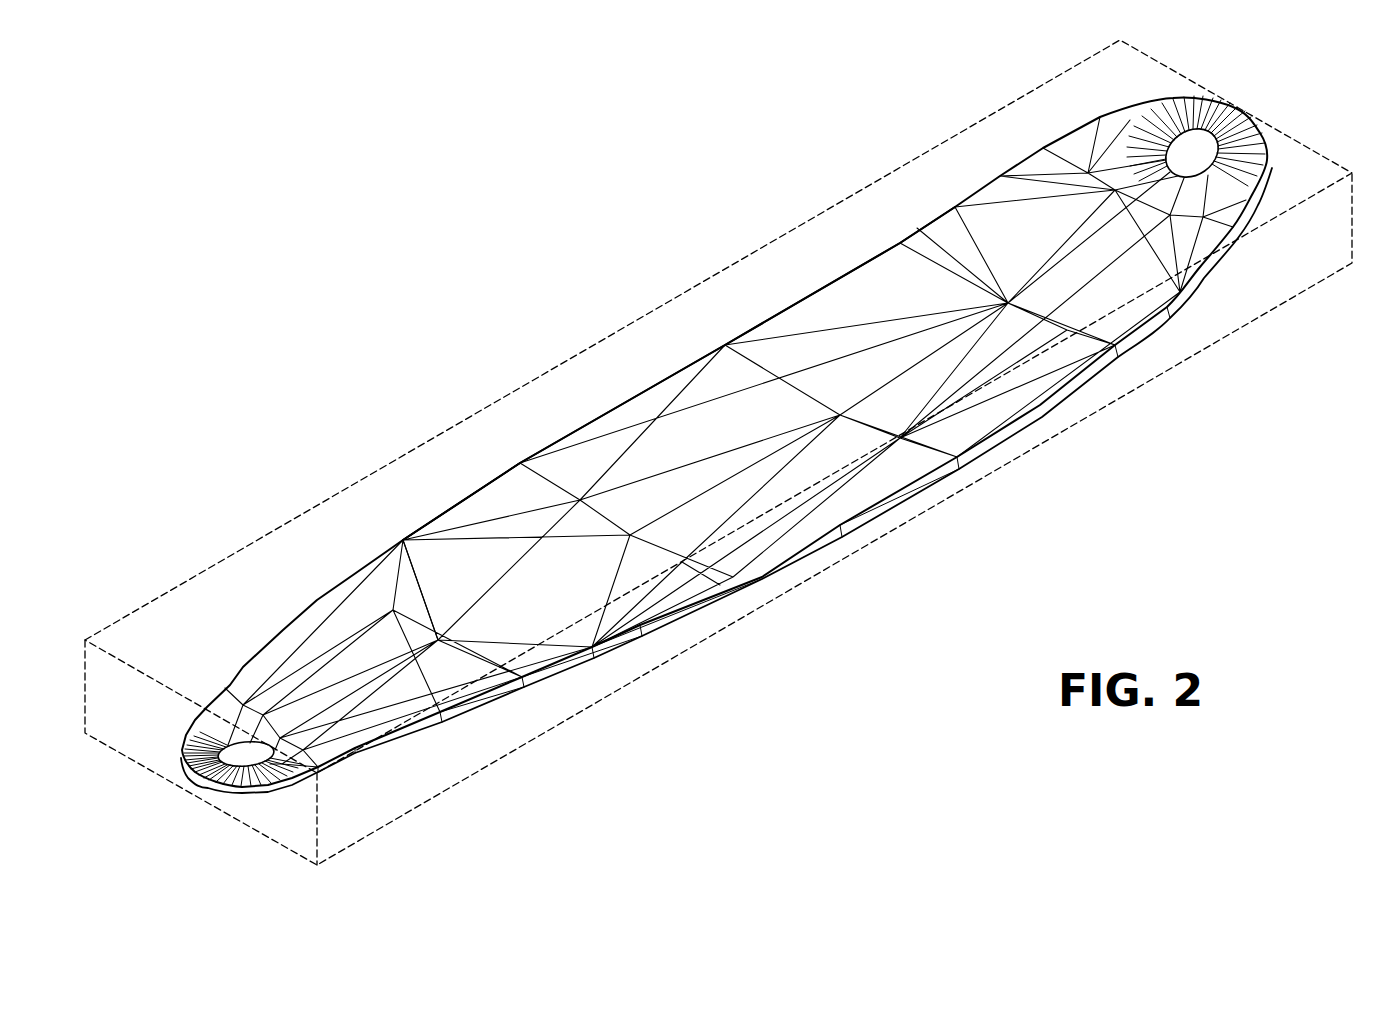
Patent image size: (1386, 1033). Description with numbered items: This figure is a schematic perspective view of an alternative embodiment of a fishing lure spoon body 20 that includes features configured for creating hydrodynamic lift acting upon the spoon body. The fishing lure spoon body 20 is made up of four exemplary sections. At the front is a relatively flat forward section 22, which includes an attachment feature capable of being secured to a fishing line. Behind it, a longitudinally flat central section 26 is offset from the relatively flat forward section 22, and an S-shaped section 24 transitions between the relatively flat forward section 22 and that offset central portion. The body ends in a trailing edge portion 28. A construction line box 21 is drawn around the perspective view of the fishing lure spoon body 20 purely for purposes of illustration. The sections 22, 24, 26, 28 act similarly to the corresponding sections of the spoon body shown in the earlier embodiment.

The fishing lure spoon body 20 is at (368, 149).
The construction line box 21 is at (1095, 413).
The relatively flat forward section 22 is at (283, 628).
The S-shaped section 24 is at (405, 540).
The longitudinally flat central section 26 is at (808, 295).
The trailing edge portion 28 is at (1100, 117).